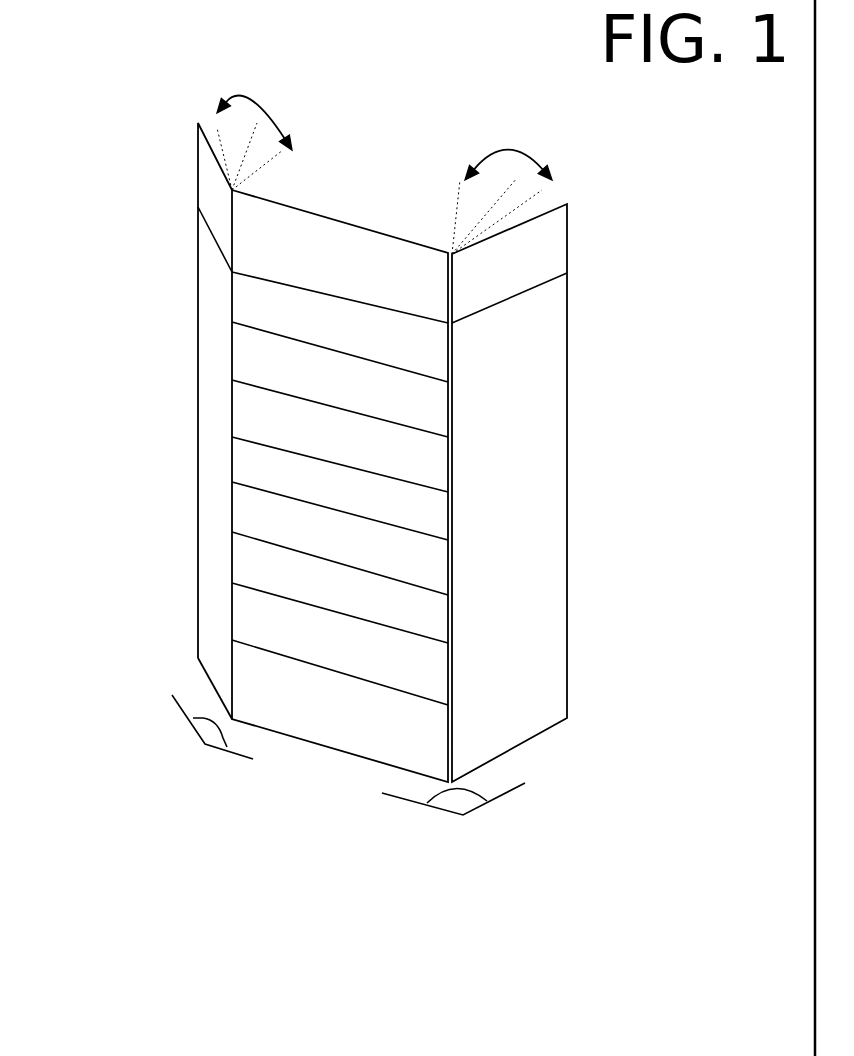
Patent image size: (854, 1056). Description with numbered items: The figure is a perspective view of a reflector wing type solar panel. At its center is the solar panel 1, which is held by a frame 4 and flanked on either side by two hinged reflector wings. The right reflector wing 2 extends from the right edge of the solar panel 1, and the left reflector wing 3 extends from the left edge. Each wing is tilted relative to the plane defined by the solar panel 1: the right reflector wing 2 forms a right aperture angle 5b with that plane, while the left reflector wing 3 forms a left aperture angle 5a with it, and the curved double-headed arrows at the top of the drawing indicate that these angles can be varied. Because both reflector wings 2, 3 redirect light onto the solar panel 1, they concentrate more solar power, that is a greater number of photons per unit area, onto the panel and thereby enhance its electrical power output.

The solar panel 1 is at (339, 252).
The right reflector wing 2 is at (527, 480).
The left reflector wing 3 is at (209, 470).
The frame 4 is at (191, 658).
The left aperture angle 5a is at (190, 760).
The right aperture angle 5b is at (447, 832).